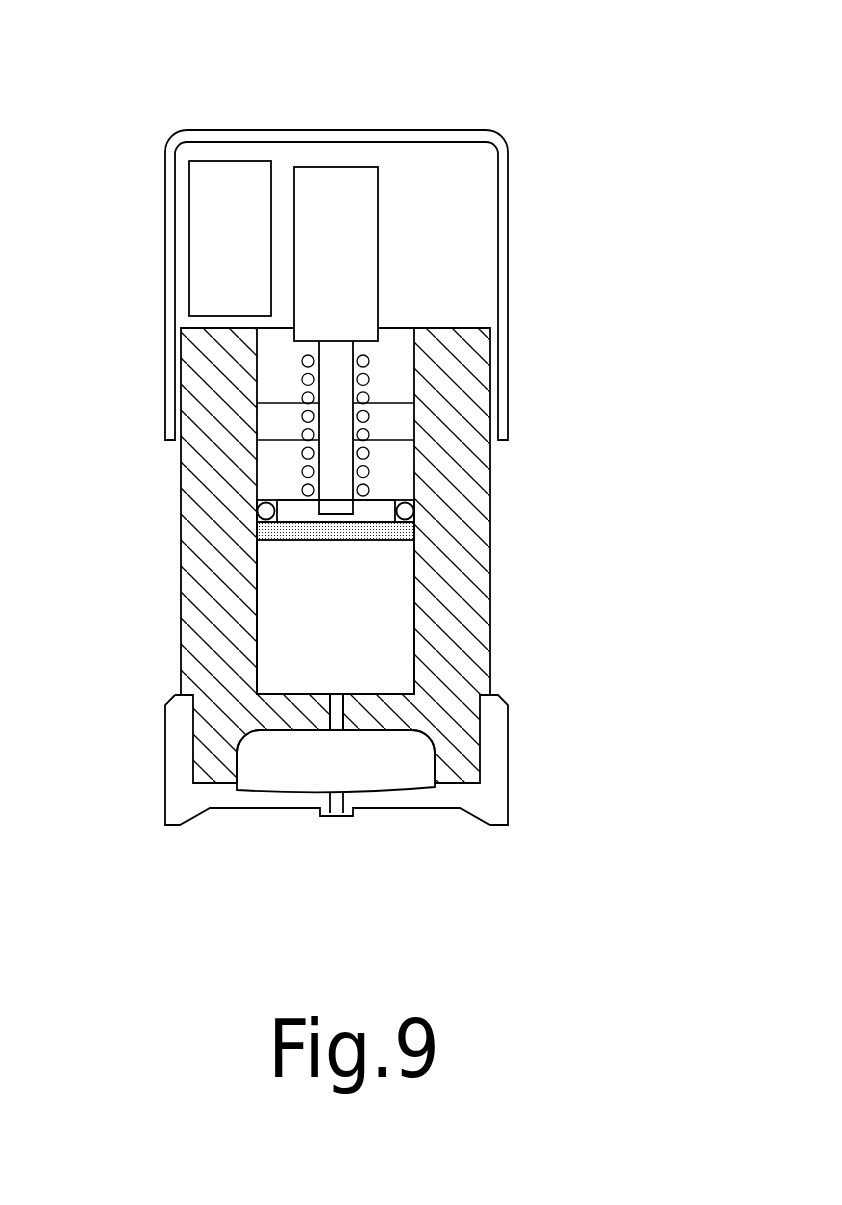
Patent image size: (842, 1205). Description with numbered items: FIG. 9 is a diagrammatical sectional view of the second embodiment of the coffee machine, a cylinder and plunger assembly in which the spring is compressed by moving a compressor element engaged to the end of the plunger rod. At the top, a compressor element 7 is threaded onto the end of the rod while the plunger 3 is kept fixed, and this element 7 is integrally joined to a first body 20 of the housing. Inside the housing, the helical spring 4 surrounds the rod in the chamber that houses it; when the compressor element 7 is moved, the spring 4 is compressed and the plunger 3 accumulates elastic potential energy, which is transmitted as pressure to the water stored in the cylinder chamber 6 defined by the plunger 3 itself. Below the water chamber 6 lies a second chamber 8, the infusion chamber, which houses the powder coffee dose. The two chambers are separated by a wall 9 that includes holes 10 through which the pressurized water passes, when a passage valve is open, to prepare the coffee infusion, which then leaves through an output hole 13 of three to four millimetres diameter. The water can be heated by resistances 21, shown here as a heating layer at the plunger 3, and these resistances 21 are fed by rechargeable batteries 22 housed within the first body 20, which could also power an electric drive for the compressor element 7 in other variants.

The first body 20 is at (325, 137).
The rechargeable batteries 22 is at (225, 247).
The compressor element 7 is at (336, 286).
The helical spring 4 is at (363, 433).
The plunger 3 is at (375, 511).
The resistances 21 is at (385, 531).
The cylinder chamber 6 is at (311, 603).
The holes 10 is at (335, 707).
The wall 9 is at (311, 708).
The infusion chamber 8 is at (307, 777).
The output hole 13 is at (333, 813).